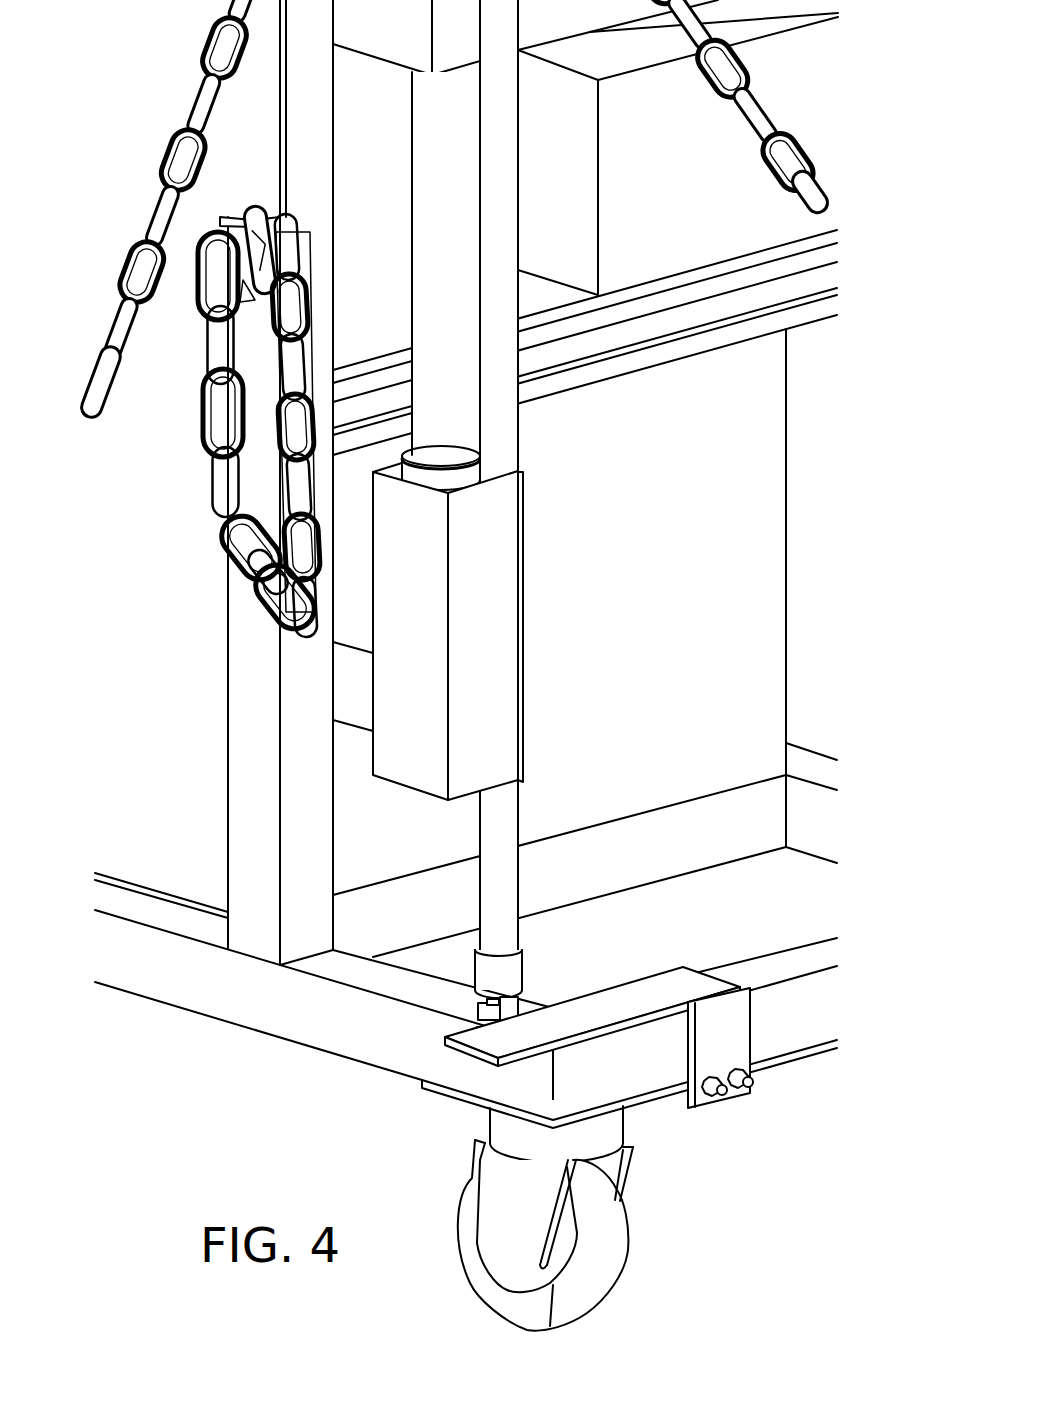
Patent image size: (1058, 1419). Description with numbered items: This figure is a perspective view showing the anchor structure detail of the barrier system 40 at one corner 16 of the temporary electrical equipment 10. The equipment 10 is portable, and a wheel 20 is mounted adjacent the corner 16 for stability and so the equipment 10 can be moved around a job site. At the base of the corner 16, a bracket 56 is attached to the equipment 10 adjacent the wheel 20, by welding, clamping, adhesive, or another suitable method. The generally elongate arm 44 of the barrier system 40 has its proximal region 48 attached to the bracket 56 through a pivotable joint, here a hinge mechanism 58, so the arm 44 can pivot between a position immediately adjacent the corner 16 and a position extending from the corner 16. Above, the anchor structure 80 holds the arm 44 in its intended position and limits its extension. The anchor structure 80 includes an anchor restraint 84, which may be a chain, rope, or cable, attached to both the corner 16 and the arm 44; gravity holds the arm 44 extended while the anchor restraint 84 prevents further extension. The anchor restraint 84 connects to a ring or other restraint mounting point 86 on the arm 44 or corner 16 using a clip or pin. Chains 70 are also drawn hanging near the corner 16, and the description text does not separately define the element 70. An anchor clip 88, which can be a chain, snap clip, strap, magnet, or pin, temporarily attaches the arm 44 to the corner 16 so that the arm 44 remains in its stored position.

The temporary electrical equipment 10 is at (466, 564).
The corner 16 is at (280, 900).
The wheel 20 is at (632, 1242).
The barrier system 40 is at (683, 1172).
The arm 44 is at (505, 437).
The proximal region 48 is at (503, 937).
The bracket 56 is at (725, 1033).
The hinge mechanism 58 is at (478, 1022).
The chain 70 is at (147, 207).
The anchor structure 80 is at (217, 431).
The anchor restraint 84 is at (208, 493).
The restraint mounting point 86 is at (230, 215).
The anchor clip 88 is at (250, 300).